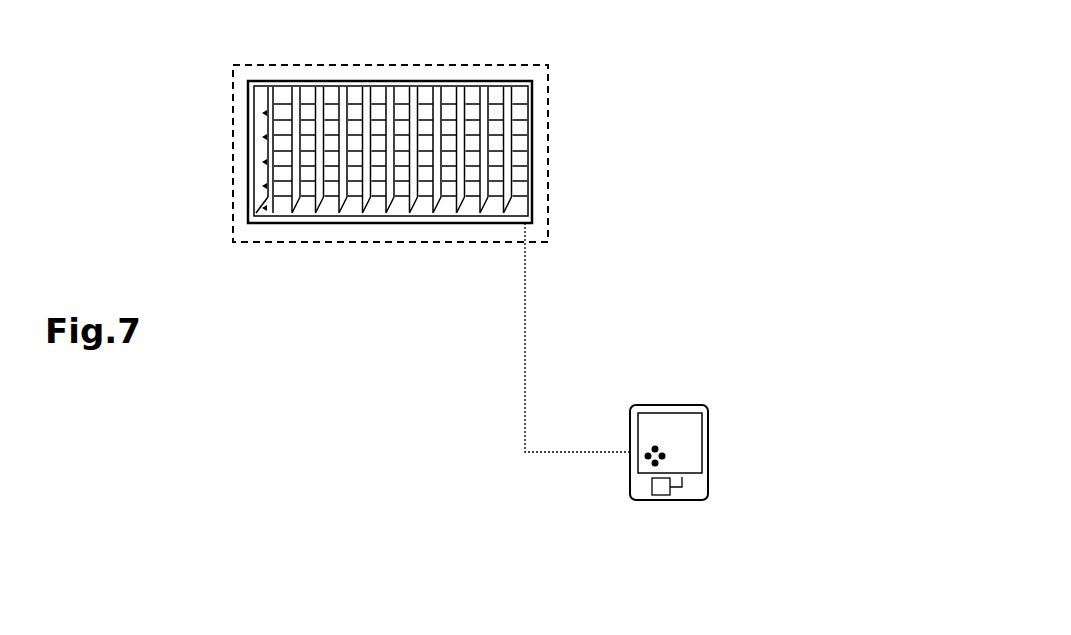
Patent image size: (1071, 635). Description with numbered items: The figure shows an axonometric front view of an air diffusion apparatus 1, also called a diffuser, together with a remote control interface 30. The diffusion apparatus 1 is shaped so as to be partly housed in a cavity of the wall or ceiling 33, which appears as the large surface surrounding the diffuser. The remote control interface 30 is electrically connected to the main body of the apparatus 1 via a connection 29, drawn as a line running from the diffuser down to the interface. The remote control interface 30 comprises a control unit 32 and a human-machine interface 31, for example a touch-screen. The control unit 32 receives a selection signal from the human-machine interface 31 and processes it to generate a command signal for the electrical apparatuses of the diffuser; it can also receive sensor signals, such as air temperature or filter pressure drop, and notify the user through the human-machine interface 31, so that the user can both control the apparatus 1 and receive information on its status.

The diffusion apparatus 1 is at (220, 94).
The connection 29 is at (540, 456).
The remote control interface 30 is at (718, 402).
The human-machine interface 31 is at (690, 452).
The control unit 32 is at (665, 489).
The wall or ceiling 33 is at (638, 144).